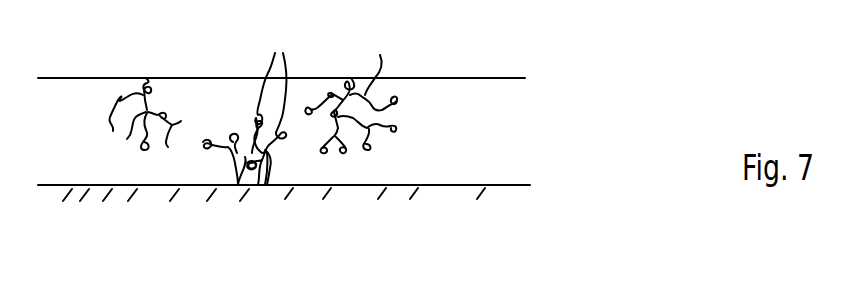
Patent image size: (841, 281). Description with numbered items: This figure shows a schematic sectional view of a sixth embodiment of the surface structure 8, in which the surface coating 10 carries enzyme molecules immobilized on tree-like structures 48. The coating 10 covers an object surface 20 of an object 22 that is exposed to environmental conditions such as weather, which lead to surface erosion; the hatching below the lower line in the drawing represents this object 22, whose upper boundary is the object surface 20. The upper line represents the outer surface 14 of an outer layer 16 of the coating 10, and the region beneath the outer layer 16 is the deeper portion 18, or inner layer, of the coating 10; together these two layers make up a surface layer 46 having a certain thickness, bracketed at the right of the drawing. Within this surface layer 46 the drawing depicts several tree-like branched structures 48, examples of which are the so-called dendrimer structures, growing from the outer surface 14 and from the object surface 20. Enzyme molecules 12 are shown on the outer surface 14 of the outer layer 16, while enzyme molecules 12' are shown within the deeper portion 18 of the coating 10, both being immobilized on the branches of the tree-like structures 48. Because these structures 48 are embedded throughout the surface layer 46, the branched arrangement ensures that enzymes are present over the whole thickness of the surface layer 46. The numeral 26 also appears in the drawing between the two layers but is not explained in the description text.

The surface structure 8 is at (497, 69).
The surface coating 10 is at (553, 122).
The enzyme molecules 12 is at (351, 77).
The enzyme molecules 12' is at (275, 87).
The outer surface 14 is at (408, 73).
The outer layer 16 is at (648, 84).
The deeper portion 18 is at (647, 128).
The object surface 20 is at (458, 213).
The object 22 is at (356, 197).
The intermediate space 26 is at (517, 152).
The surface layer 46 is at (710, 93).
The tree-like structures 48 is at (270, 223).